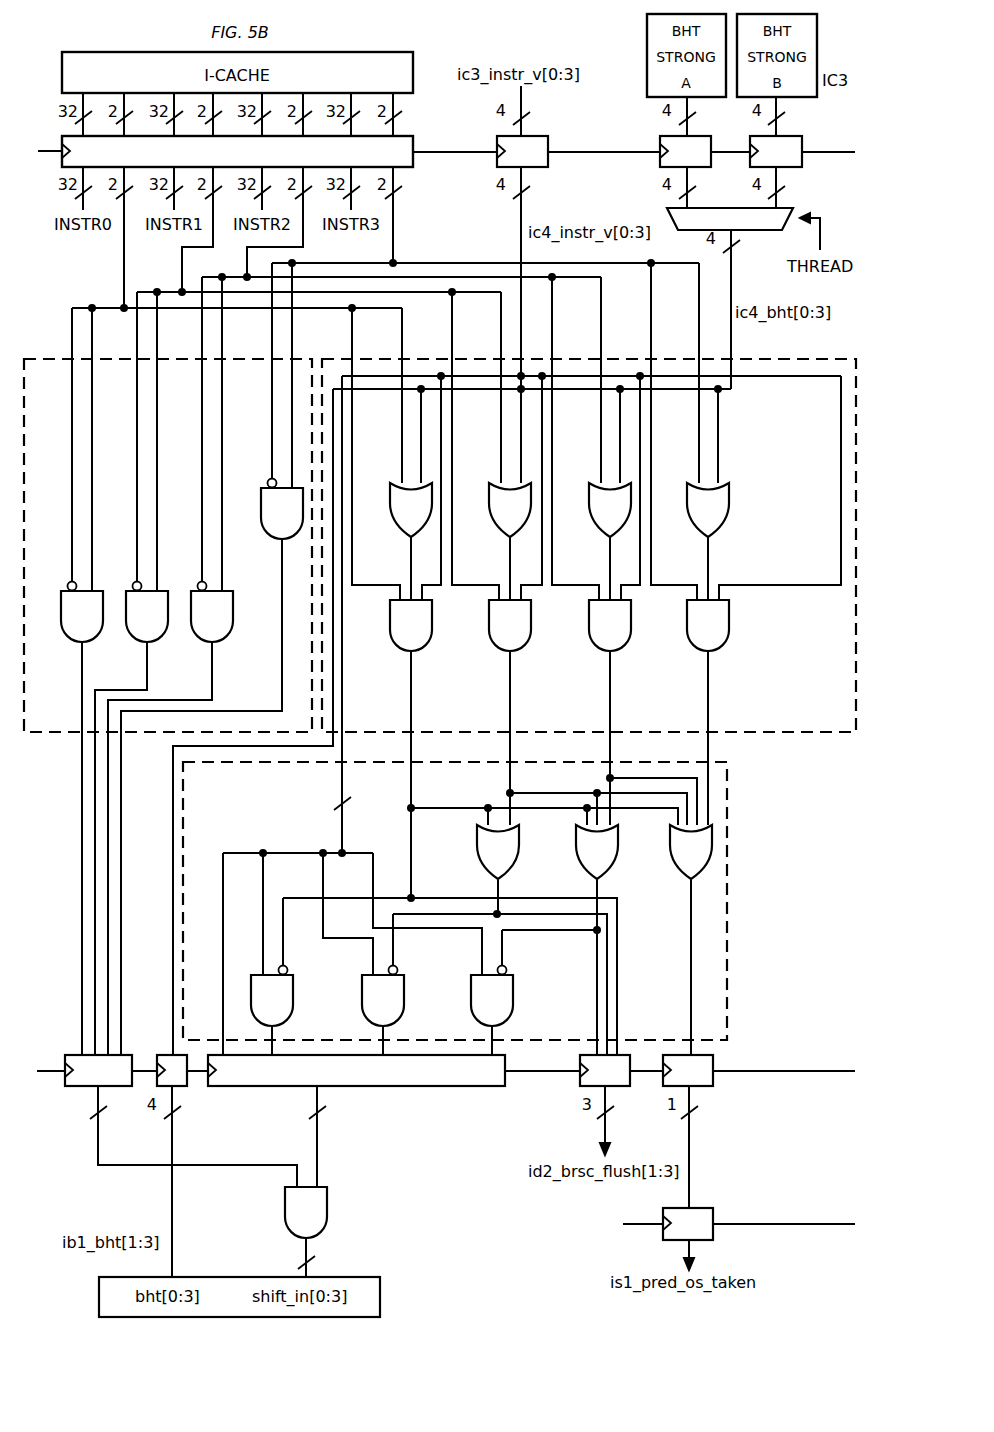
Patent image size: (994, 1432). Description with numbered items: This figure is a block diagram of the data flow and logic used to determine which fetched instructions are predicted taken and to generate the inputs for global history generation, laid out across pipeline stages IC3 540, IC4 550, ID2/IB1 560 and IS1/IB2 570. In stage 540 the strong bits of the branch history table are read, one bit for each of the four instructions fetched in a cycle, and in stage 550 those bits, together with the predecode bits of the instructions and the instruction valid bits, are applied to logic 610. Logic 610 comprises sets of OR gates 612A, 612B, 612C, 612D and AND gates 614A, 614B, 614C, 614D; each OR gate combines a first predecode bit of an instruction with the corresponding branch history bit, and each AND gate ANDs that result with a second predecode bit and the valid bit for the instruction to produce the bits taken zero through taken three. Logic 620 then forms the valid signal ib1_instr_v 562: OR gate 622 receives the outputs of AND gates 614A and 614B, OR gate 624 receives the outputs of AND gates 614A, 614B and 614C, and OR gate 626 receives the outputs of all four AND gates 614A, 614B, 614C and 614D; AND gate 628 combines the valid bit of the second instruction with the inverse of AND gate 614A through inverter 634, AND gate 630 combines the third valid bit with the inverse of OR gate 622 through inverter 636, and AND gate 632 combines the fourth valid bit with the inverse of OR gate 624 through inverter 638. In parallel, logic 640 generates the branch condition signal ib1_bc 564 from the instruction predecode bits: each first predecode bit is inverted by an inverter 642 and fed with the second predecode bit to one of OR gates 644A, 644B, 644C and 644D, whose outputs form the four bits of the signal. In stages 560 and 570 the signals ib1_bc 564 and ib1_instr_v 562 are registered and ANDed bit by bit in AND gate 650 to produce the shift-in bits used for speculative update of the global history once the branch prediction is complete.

The stage IC3 540 is at (853, 129).
The stage IC4 550 is at (824, 930).
The stage ID2/IB1 560 is at (824, 1175).
The stage IS1/IB2 570 is at (824, 1305).
The ib1_instr_v[0:3] signal line 562 is at (319, 1155).
The ib1_bc[0:3] signal line 564 is at (243, 1168).
The taken determination logic 610 is at (792, 733).
The OR gate 612A is at (393, 518).
The OR gate 612B is at (492, 518).
The OR gate 612C is at (592, 518).
The OR gate 612D is at (727, 518).
The AND gate 614A is at (430, 640).
The AND gate 614B is at (529, 640).
The AND gate 614C is at (629, 640).
The AND gate 614D is at (727, 624).
The instruction valid generation logic 620 is at (727, 977).
The OR gate 622 is at (478, 865).
The OR gate 624 is at (577, 865).
The OR gate 626 is at (671, 865).
The AND gate 628 is at (293, 1002).
The AND gate 630 is at (404, 1002).
The AND gate 632 is at (513, 1002).
The inverter 634 is at (288, 968).
The inverter 636 is at (398, 968).
The inverter 638 is at (507, 968).
The branch condition generation logic 640 is at (60, 733).
The inverter 642 is at (66, 581).
The OR gate 644A is at (101, 628).
The OR gate 644B is at (166, 628).
The OR gate 644C is at (231, 628).
The OR gate 644D is at (262, 528).
The AND gate 650 is at (328, 1212).